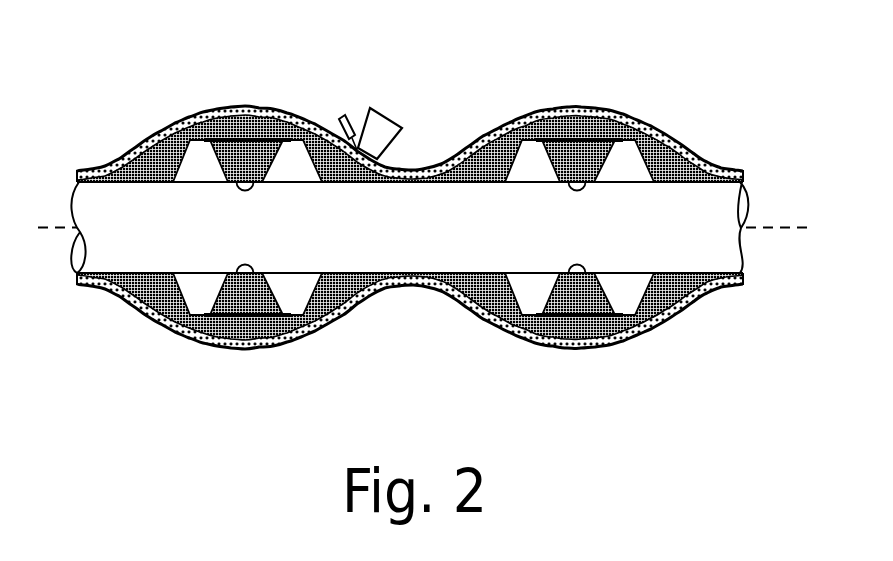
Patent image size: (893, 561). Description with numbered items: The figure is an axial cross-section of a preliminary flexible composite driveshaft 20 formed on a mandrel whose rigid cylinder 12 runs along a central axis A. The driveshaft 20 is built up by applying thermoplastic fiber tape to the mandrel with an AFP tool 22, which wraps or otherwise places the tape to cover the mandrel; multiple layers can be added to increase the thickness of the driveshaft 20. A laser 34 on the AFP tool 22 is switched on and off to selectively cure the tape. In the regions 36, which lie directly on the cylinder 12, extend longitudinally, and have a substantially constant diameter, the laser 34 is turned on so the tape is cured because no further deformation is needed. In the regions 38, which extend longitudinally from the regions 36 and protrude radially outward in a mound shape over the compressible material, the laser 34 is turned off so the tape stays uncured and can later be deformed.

The rigid cylinder 12 is at (401, 243).
The preliminary flexible composite driveshaft 20 is at (658, 132).
The AFP tool 22 is at (380, 128).
The laser 34 is at (342, 132).
The regions formed directly on cylinder 36 is at (452, 370).
The regions overlaying compressible material 38 is at (375, 370).
The axis A is at (777, 228).